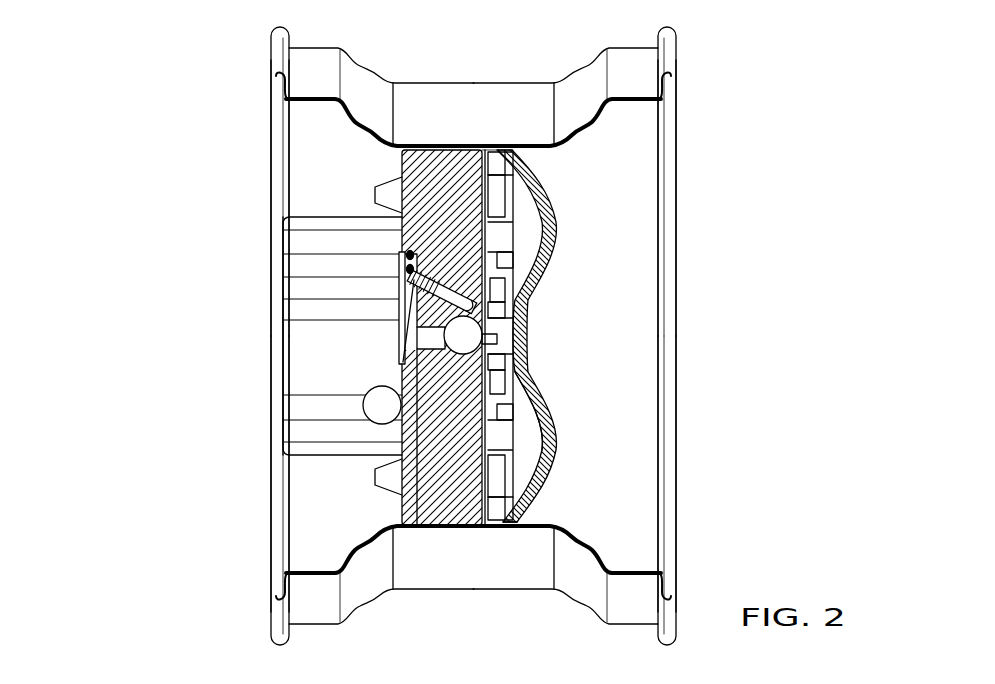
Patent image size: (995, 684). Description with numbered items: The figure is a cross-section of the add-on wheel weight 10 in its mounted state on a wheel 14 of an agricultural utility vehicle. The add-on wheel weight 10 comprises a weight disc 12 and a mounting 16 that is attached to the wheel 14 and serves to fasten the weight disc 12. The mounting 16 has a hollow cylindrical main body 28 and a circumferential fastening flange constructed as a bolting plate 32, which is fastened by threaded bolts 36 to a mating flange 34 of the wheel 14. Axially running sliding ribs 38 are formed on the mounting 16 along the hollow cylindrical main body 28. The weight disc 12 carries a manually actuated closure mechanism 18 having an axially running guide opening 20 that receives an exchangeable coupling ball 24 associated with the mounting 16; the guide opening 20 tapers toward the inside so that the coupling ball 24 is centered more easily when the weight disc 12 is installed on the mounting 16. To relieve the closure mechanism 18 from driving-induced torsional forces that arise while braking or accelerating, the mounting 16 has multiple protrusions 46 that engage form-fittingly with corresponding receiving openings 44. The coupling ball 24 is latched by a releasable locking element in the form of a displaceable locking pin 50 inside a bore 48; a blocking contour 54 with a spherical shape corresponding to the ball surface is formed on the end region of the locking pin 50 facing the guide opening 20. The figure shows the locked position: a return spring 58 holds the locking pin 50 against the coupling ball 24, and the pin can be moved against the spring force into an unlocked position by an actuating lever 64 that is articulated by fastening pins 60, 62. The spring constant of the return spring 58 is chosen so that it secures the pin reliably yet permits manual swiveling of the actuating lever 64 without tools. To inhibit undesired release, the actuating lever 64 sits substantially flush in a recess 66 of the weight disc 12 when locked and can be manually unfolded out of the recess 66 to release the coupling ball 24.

The add-on wheel weight 10 is at (214, 42).
The weight disc 12 is at (430, 88).
The wheel 14 is at (678, 55).
The mounting 16 is at (143, 340).
The closure mechanism 18 is at (502, 274).
The guide opening 20 is at (500, 353).
The coupling ball 24 is at (492, 340).
The hollow cylindrical main body 28 is at (283, 455).
The bolting plate 32 is at (507, 527).
The mating flange 34 is at (521, 497).
The threaded bolts 36 is at (540, 452).
The sliding ribs 38 is at (343, 219).
The receiving openings 44 is at (472, 145).
The protrusions 46 is at (493, 203).
The bore 48 is at (495, 304).
The locking pin 50 is at (455, 307).
The blocking contour 54 is at (470, 330).
The return spring 58 is at (405, 286).
The fastening pin 60 is at (410, 267).
The fastening pin 62 is at (410, 254).
The actuating lever 64 is at (400, 328).
The recess 66 is at (398, 350).